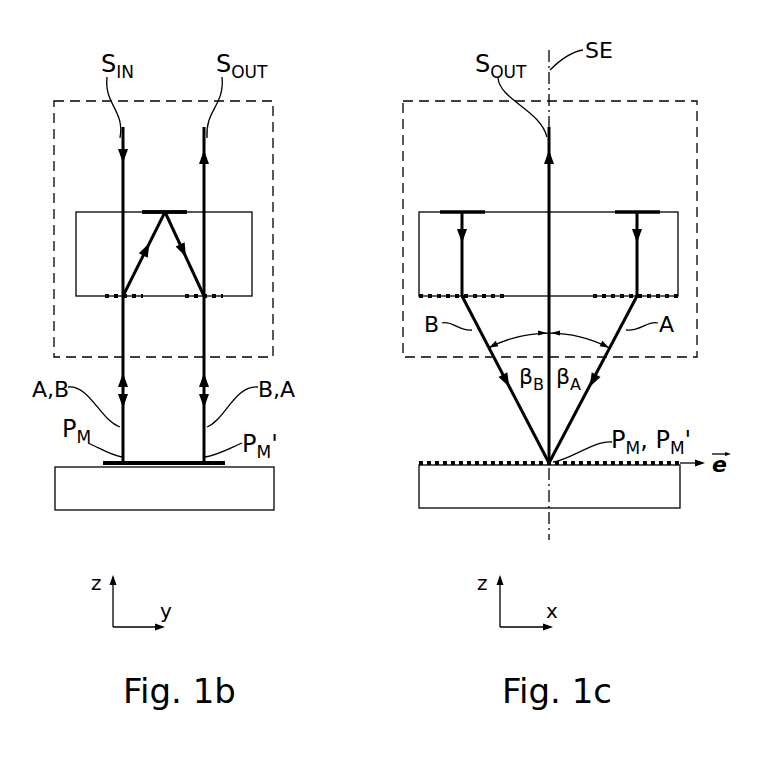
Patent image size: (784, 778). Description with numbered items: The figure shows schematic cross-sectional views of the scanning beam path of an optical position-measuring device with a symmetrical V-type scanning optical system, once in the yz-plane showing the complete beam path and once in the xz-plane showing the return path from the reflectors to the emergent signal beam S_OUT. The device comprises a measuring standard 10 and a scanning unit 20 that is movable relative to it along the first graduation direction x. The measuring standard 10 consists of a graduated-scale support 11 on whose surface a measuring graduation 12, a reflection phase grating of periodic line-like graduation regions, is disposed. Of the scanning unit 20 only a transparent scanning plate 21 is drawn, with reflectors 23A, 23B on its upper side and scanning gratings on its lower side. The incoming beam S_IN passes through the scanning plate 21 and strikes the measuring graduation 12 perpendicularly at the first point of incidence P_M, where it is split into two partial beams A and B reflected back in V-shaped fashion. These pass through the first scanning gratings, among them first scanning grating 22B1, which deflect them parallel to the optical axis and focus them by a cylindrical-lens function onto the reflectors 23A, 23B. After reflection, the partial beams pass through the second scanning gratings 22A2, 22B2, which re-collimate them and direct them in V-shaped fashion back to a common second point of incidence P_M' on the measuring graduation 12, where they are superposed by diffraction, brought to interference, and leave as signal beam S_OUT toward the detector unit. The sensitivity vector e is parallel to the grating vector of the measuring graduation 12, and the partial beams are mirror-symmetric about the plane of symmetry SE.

In FIG. 1B, the measuring standard 10 is at (146, 510).
In FIG. 1C, the measuring standard 10 is at (522, 510).
In FIG. 1B, the graduated-scale support 11 is at (248, 503).
In FIG. 1C, the graduated-scale support 11 is at (653, 502).
In FIG. 1B, the measuring graduation 12 is at (100, 463).
In FIG. 1C, the measuring graduation 12 is at (420, 462).
In FIG. 1B, the scanning unit 20 is at (283, 110).
In FIG. 1C, the scanning unit 20 is at (707, 113).
In FIG. 1B, the transparent scanning plate 21 is at (91, 243).
In FIG. 1C, the transparent scanning plate 21 is at (433, 242).
In FIG. 1B, the second scanning grating 22A2 is at (222, 297).
In FIG. 1C, the second scanning grating 22A2 is at (608, 293).
In FIG. 1C, the second scanning grating 22B2 is at (478, 293).
In FIG. 1B, the first scanning grating 22B1 is at (106, 297).
In FIG. 1B, the reflector 23A is at (167, 210).
In FIG. 1C, the reflector 23A is at (650, 208).
In FIG. 1B, the reflector 23B is at (164, 182).
In FIG. 1C, the reflector 23B is at (470, 208).